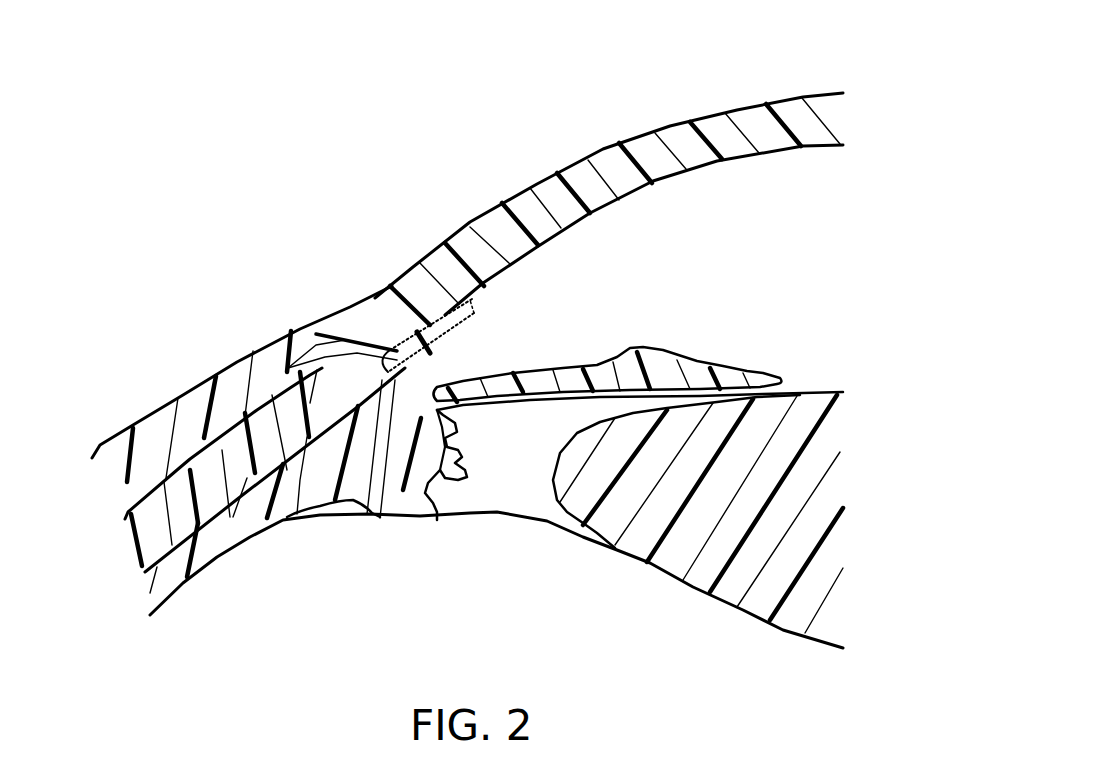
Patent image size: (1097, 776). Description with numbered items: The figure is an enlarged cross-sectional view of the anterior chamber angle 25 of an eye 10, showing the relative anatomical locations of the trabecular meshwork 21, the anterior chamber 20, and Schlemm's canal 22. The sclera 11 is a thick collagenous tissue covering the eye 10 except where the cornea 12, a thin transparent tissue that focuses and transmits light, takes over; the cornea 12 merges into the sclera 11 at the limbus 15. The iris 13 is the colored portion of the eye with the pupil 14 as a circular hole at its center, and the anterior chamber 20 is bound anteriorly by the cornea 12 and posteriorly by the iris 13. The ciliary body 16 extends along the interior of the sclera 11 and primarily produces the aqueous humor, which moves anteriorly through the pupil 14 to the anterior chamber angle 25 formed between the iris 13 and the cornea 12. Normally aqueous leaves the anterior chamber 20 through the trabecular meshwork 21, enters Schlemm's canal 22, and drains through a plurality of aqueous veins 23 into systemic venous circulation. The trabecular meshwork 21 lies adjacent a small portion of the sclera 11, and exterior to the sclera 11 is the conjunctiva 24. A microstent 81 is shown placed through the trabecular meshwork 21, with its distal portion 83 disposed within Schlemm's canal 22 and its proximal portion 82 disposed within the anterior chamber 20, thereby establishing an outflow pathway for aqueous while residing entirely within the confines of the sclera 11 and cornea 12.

The eye 10 is at (470, 158).
The sclera 11 is at (230, 443).
The cornea 12 is at (599, 147).
The iris 13 is at (703, 360).
The pupil 14 is at (807, 362).
The limbus 15 is at (375, 292).
The ciliary body 16 is at (437, 523).
The anterior chamber 20 is at (707, 203).
The trabecular meshwork 21 is at (463, 318).
The Schlemm's canal 22 is at (352, 312).
The aqueous veins 23 is at (292, 522).
The conjunctiva 24 is at (207, 380).
The anterior chamber angle 25 is at (373, 523).
The microstent 81 is at (398, 345).
The proximal portion 82 is at (445, 352).
The distal portion 83 is at (392, 332).